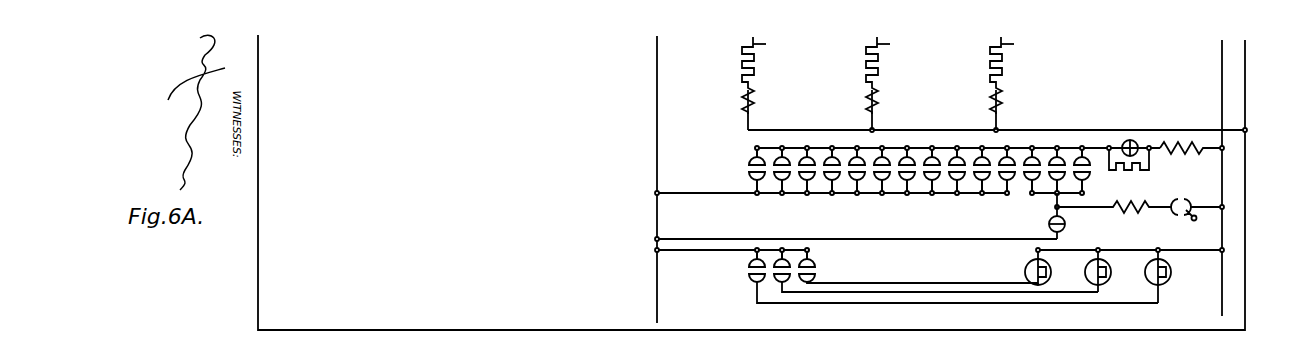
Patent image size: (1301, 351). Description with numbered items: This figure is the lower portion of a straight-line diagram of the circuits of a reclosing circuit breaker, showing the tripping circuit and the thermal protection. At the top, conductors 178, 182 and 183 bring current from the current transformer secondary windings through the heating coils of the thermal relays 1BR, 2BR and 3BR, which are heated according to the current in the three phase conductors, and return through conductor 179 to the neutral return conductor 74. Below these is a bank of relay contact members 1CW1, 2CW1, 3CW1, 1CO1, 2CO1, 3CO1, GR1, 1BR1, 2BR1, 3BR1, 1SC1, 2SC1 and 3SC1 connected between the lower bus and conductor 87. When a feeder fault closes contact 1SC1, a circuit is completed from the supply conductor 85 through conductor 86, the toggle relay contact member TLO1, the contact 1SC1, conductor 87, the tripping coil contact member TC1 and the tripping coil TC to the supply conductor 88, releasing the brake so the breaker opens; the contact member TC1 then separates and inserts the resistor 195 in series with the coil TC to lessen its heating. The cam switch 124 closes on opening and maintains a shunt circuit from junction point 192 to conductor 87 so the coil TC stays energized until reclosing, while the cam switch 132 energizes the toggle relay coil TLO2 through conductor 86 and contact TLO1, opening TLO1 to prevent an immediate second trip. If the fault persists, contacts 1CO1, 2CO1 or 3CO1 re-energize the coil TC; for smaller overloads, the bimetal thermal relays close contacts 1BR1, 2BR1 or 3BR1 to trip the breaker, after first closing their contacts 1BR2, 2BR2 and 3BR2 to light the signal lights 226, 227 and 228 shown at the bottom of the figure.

The neutral return conductor 74 is at (258, 248).
The supply conductor 85 is at (658, 81).
The supply conductor 88 is at (1222, 67).
The conductor 87 is at (985, 147).
The conductor 86 is at (884, 241).
The conductor 179 is at (1060, 135).
The junction point 192 is at (663, 191).
The cam switch 124 is at (750, 165).
The conductor 183 is at (767, 83).
The conductor 182 is at (891, 83).
The conductor 178 is at (1015, 83).
The heating coil of thermal relay 3BR is at (755, 100).
The heating coil of thermal relay 2BR is at (879, 100).
The heating coil of thermal relay 1BR is at (1003, 100).
The relay contact member 1CW1 is at (779, 198).
The relay contact member 2CW1 is at (806, 198).
The relay contact member 3CW1 is at (832, 198).
The relay contact member 1CO1 is at (862, 204).
The relay contact member 2CO1 is at (883, 198).
The relay contact member 3CO1 is at (907, 198).
The relay contact member GR1 is at (933, 198).
The relay contact member 1BR1 is at (957, 198).
The relay contact member 2BR1 is at (982, 198).
The relay contact member 3BR1 is at (1007, 198).
The relay contact member 1SC1 is at (1028, 160).
The relay contact member 2SC1 is at (1056, 158).
The relay contact member 3SC1 is at (1084, 158).
The tripping coil contact member TC1 is at (1137, 140).
The tripping coil TC is at (1171, 141).
The resistor 195 is at (1138, 171).
The toggle relay coil TLO2 is at (1113, 218).
The toggle relay contact member TLO1 is at (1062, 236).
The cam switch 132 is at (1192, 217).
The contacts 1BR2 is at (748, 262).
The contacts 2BR2 is at (772, 276).
The contacts 3BR2 is at (815, 262).
The signal light 228 is at (1024, 268).
The signal light 227 is at (1084, 270).
The signal light 226 is at (1144, 275).